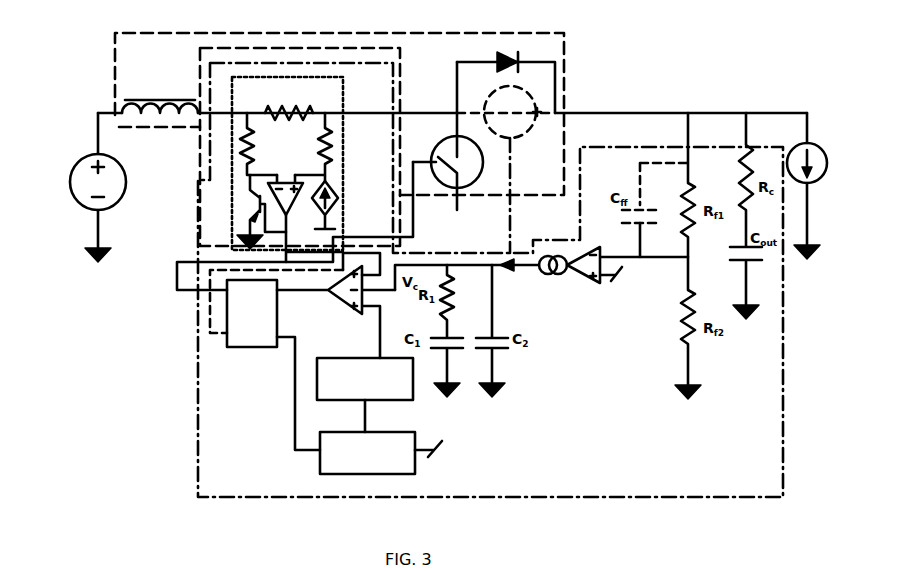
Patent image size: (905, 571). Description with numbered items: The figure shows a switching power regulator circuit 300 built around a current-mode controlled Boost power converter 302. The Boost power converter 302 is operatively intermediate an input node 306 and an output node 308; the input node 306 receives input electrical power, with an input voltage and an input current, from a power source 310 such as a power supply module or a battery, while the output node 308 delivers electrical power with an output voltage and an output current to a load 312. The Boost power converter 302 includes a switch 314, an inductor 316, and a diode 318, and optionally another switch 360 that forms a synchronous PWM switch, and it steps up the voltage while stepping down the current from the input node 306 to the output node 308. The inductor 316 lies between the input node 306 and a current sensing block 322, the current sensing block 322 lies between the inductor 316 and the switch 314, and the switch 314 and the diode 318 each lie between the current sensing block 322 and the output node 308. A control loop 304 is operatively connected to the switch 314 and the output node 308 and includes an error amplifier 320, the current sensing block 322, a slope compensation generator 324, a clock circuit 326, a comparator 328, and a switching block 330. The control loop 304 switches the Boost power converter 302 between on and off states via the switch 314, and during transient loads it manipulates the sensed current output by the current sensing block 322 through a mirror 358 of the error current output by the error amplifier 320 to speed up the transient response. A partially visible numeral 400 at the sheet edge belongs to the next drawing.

The power regulator circuit 300 is at (736, 40).
The Boost power converter 302 is at (567, 45).
The control loop 304 is at (595, 499).
The input node 306 is at (95, 110).
The output node 308 is at (632, 112).
The power source 310 is at (78, 160).
The load 312 is at (826, 175).
The switch 314 is at (432, 152).
The inductor 316 is at (150, 118).
The diode 318 is at (497, 61).
The error amplifier 320 is at (600, 282).
The current sensing block 322 is at (343, 80).
The slope compensation generator 324 is at (394, 401).
The clock circuit 326 is at (369, 476).
The comparator 328 is at (346, 306).
The switching block 330 is at (255, 350).
The mirror 358 is at (332, 196).
The another switch 360 is at (522, 131).
The switching regulator (next figure) 400 is at (756, 570).